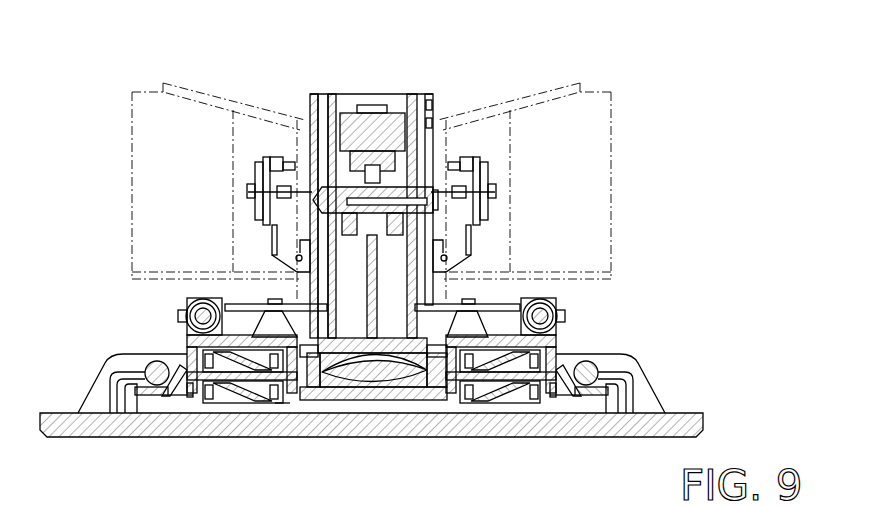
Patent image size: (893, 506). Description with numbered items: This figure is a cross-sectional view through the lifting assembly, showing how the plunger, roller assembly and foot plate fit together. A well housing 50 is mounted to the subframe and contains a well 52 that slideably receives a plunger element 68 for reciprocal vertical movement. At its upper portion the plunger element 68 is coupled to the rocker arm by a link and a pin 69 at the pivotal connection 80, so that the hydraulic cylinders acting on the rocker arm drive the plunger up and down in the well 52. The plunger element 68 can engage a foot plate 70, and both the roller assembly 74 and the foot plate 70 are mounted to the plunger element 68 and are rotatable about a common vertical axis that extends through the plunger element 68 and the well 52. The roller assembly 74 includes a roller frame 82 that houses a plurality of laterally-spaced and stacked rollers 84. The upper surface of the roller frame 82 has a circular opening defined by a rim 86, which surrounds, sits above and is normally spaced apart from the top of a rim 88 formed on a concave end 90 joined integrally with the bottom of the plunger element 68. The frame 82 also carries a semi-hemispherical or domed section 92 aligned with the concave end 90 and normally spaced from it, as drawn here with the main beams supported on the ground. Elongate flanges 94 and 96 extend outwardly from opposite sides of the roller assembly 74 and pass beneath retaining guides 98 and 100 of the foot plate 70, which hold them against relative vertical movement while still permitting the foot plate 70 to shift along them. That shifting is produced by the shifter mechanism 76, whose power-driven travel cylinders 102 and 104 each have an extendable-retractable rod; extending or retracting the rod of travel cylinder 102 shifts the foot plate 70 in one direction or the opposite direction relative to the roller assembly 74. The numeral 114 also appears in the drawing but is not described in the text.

The well housing 50 is at (187, 92).
The well 52 is at (308, 124).
The plunger element 68 is at (310, 101).
The pin 69 is at (418, 192).
The foot plate 70 is at (124, 426).
The roller assembly 74 is at (282, 409).
The shifter mechanism 76 is at (181, 293).
The pivotal connection 80 is at (363, 133).
The roller frame 82 is at (190, 342).
The rollers 84 is at (242, 402).
The rim 86 is at (315, 340).
The rim 88 is at (313, 345).
The concave end 90 is at (340, 352).
The domed section 92 is at (387, 375).
The elongate flange 94 is at (178, 396).
The elongate flange 96 is at (570, 392).
The retaining guide 98 is at (145, 368).
The retaining guide 100 is at (592, 370).
The travel cylinder 102 is at (187, 313).
The travel cylinder 104 is at (556, 307).
The fastener 114 is at (289, 499).